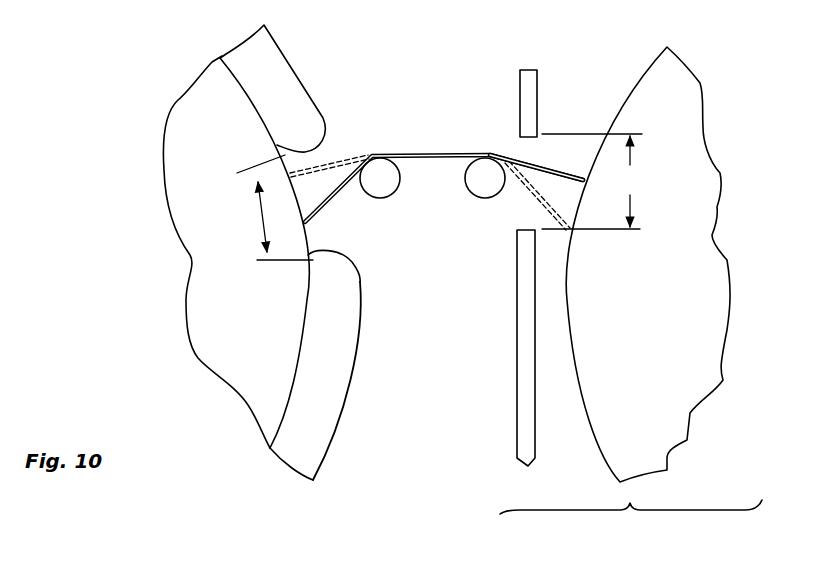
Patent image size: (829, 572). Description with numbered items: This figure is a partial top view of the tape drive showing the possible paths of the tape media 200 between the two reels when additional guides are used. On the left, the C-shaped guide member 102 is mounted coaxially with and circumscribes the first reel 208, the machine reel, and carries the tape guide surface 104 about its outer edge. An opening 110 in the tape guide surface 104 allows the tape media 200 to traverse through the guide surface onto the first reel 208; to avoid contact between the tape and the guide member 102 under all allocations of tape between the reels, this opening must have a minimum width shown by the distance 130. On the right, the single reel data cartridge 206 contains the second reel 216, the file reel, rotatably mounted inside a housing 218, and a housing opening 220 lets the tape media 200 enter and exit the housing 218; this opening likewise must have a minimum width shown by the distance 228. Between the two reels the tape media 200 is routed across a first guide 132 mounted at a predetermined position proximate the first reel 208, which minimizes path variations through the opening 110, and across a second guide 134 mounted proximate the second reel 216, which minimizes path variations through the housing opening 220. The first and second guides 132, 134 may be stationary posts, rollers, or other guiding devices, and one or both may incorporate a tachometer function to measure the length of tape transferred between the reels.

The guide member 102 is at (317, 428).
The tape guide surface 104 is at (362, 365).
The opening 110 is at (262, 137).
The distance 130 is at (264, 207).
The first guide 132 is at (383, 188).
The second guide 134 is at (485, 188).
The tape media 200 is at (425, 152).
The single reel data cartridge 206 is at (631, 526).
The first reel 208 is at (224, 342).
The second reel 216 is at (626, 342).
The housing 218 is at (537, 93).
The housing opening 220 is at (550, 147).
The distance 228 is at (595, 181).